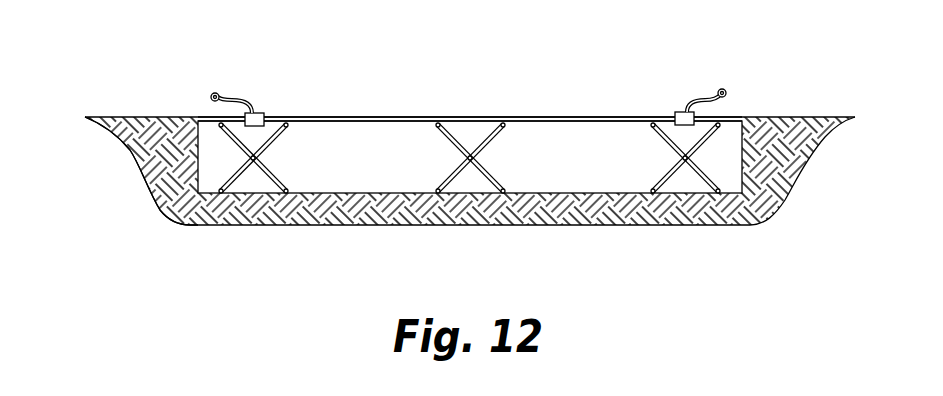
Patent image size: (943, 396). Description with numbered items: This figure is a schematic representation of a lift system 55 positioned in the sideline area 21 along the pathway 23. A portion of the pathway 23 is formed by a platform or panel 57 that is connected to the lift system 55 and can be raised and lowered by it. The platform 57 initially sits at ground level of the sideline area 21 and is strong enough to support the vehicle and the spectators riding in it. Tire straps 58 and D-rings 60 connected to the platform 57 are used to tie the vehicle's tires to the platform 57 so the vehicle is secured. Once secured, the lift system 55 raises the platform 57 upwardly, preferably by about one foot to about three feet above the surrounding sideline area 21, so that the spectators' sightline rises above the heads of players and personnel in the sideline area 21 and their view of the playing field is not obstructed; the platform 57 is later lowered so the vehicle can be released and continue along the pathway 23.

The sideline area 21 is at (780, 116).
The pathway 23 is at (170, 117).
The lift system 55 is at (418, 164).
The platform or panel 57 is at (460, 121).
The tire straps 58 is at (252, 108).
The D-rings 60 is at (217, 94).